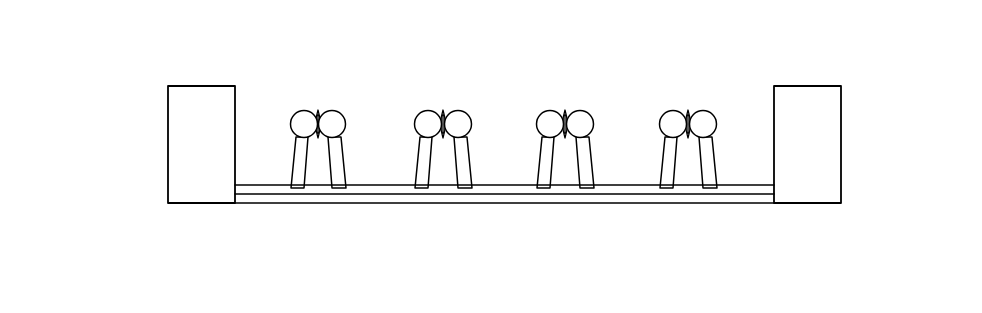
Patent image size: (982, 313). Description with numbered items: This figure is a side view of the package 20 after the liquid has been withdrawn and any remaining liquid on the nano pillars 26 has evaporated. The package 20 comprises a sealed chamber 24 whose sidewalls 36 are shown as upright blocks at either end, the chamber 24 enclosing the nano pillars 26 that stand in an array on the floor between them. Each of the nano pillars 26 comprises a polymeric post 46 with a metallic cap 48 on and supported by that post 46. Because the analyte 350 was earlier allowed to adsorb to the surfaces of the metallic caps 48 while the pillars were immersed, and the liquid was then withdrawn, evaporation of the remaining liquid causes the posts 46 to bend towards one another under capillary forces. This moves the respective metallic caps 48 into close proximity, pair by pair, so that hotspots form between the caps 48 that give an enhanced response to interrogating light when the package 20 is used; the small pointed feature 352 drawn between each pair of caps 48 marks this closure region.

The package 20 is at (121, 65).
The sealed chamber 24 is at (157, 119).
The nano pillars 26 is at (468, 100).
The sidewalls 36 is at (167, 165).
The polymeric post 46 is at (293, 165).
The metallic cap 48 is at (295, 127).
The analyte 350 is at (297, 127).
The joint between contact heads 352 is at (320, 110).